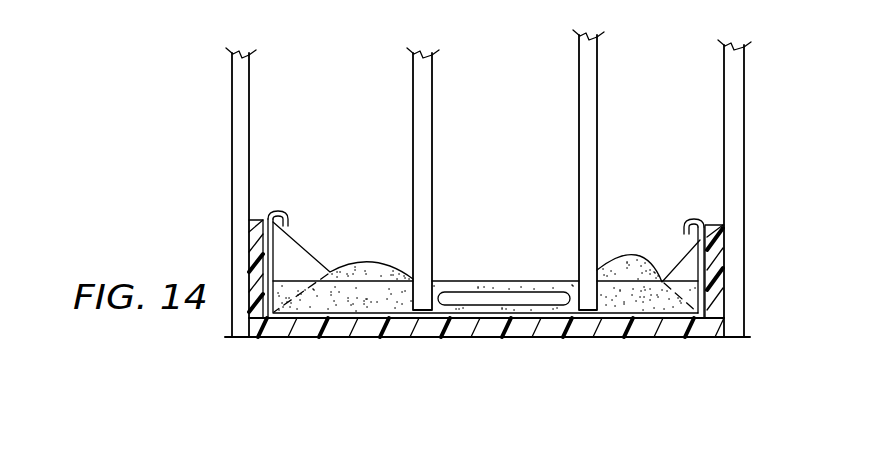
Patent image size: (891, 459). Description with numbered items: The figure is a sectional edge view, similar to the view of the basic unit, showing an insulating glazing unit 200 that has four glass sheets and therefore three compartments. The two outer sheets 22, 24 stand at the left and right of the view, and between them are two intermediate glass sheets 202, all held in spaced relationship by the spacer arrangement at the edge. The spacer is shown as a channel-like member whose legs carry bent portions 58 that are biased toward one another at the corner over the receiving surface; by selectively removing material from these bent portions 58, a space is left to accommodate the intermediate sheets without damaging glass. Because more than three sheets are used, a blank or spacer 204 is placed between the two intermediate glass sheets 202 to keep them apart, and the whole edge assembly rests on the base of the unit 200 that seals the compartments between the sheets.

The outer sheet 22 is at (746, 78).
The outer sheet 24 is at (232, 138).
The bent portions of the spacer legs 58 is at (305, 252).
The unit 200 is at (402, 343).
The glass sheets 202 is at (434, 75).
The blank or spacer 204 is at (522, 300).